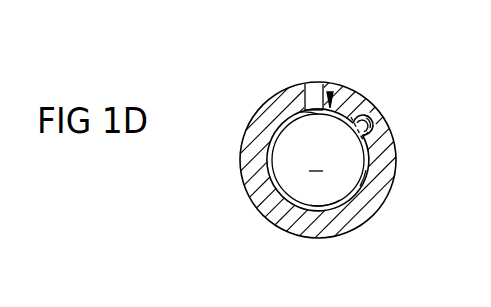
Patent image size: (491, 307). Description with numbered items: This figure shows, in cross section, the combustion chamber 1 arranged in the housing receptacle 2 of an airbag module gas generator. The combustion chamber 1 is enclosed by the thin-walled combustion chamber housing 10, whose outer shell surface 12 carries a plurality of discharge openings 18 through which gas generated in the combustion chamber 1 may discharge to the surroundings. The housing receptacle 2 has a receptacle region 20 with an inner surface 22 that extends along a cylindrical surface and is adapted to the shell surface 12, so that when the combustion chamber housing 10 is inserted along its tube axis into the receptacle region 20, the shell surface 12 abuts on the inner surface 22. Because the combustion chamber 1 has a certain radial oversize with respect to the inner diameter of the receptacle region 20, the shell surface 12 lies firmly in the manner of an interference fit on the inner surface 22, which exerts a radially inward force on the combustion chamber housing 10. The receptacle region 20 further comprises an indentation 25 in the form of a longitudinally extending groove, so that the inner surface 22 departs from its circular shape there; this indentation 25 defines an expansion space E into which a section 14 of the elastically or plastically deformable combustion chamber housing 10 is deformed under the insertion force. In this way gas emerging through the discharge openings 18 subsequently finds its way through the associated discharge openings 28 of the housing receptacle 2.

The combustion chamber 1 is at (317, 159).
The housing receptacle 2 is at (280, 213).
The combustion chamber housing 10 is at (330, 92).
The shell surface 12 is at (305, 128).
The section of the combustion chamber housing 14 is at (360, 117).
The discharge openings 18 is at (305, 130).
The receptacle region 20 is at (373, 172).
The inner surface 22 is at (328, 200).
The indentation 25 is at (374, 121).
The discharge openings of the housing receptacle 28 is at (316, 96).
The expansion space E is at (386, 126).